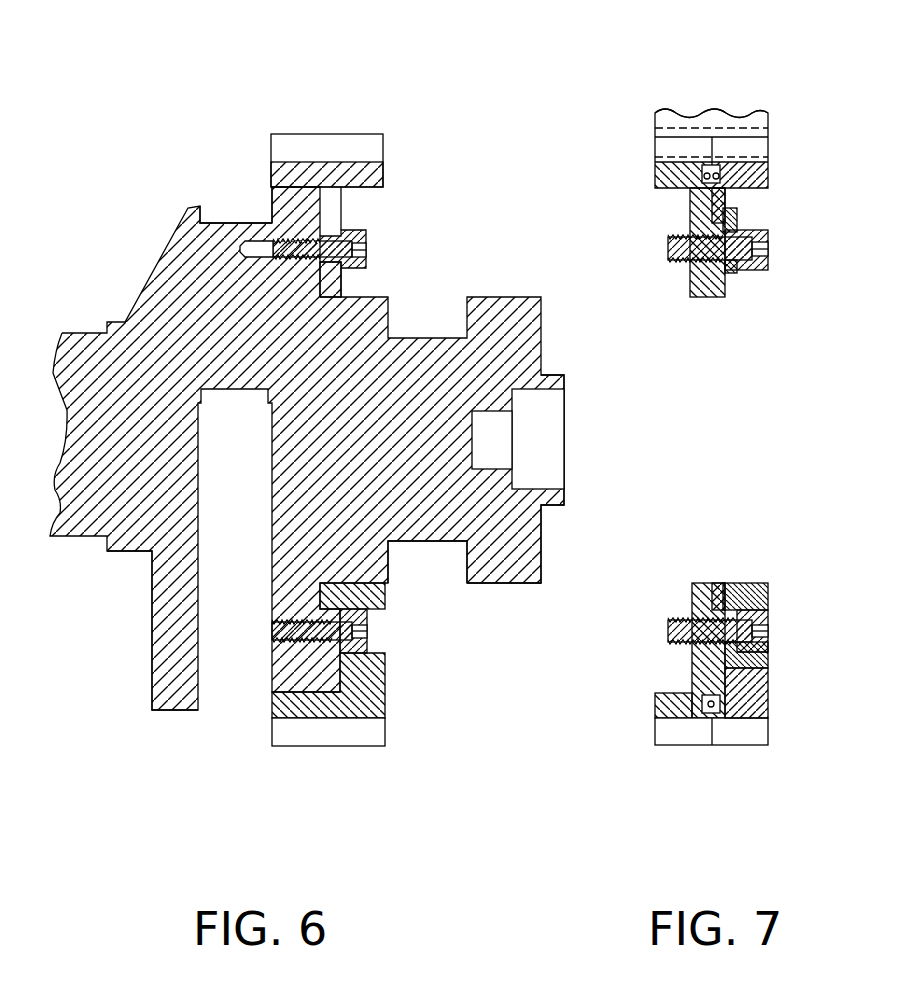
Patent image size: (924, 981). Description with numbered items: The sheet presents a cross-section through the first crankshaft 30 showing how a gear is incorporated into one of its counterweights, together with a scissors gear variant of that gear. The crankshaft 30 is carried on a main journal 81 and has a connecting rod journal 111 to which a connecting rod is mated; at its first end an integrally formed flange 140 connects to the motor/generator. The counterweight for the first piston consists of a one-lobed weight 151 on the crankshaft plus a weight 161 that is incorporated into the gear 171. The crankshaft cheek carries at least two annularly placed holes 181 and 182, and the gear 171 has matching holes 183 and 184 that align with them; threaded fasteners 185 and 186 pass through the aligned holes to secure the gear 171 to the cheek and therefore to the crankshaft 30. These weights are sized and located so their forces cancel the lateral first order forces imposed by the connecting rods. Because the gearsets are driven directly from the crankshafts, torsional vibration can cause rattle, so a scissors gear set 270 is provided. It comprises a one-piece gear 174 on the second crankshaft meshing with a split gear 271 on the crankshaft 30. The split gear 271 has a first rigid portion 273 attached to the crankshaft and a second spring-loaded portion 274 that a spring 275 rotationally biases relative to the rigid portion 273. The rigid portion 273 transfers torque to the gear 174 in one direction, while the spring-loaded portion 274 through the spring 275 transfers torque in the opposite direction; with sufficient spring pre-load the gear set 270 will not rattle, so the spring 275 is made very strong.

In FIG. 6, the first crankshaft 30 is at (70, 540).
In FIG. 6, the first connecting rod journal 111 is at (213, 222).
In FIG. 6, the lobed weight 151 is at (152, 667).
In FIG. 6, the gear 171 is at (352, 134).
In FIG. 6, the hole 181 is at (258, 238).
In FIG. 6, the hole 183 is at (332, 232).
In FIG. 6, the threaded fastener 185 is at (368, 264).
In FIG. 6, the main journal 81 is at (427, 542).
In FIG. 6, the flange 140 is at (523, 583).
In FIG. 6, the weight 161 is at (368, 592).
In FIG. 6, the hole 182 is at (285, 643).
In FIG. 6, the hole 184 is at (333, 648).
In FIG. 6, the threaded fastener 186 is at (368, 644).
In FIG. 7, the one-piece gear 174 is at (768, 114).
In FIG. 7, the scissors gear set 270 is at (779, 143).
In FIG. 7, the split gear 271 is at (641, 148).
In FIG. 7, the spring 275 is at (768, 177).
In FIG. 7, the first rigid portion 273 is at (676, 746).
In FIG. 7, the second spring-loaded portion 274 is at (742, 746).